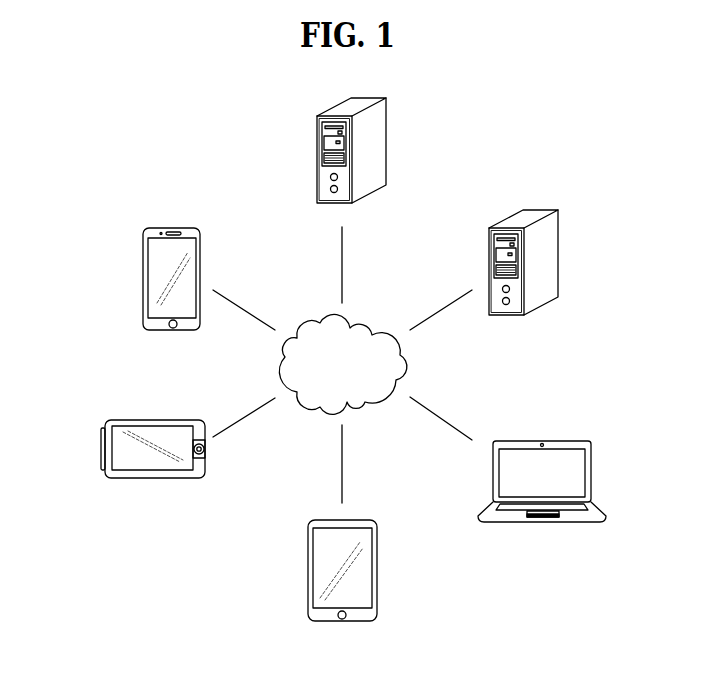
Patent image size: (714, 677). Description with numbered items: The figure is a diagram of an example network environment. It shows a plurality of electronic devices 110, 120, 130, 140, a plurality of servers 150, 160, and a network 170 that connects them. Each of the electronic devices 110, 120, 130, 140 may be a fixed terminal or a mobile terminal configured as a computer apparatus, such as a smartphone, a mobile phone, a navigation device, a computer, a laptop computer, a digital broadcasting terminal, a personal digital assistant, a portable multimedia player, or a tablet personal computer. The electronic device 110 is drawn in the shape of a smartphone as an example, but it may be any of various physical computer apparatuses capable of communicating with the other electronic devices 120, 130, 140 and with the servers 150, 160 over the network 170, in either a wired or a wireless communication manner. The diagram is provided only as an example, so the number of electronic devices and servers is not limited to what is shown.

The electronic device 110 is at (143, 279).
The electronic device 120 is at (102, 447).
The electronic device 130 is at (377, 570).
The electronic device 140 is at (591, 470).
The server 150 is at (557, 250).
The server 160 is at (386, 140).
The network 170 is at (362, 322).